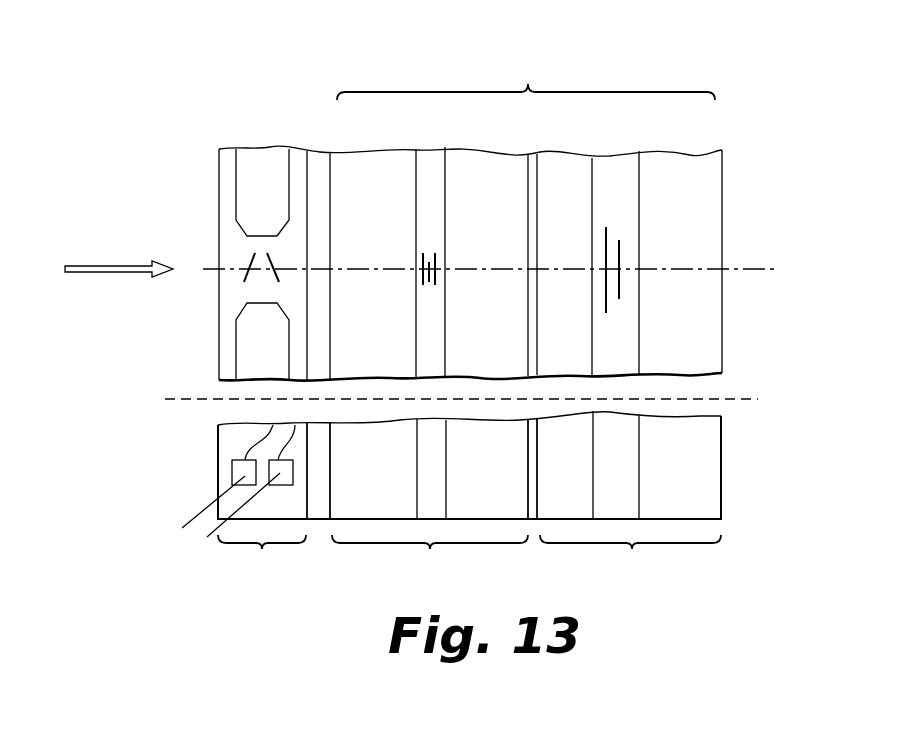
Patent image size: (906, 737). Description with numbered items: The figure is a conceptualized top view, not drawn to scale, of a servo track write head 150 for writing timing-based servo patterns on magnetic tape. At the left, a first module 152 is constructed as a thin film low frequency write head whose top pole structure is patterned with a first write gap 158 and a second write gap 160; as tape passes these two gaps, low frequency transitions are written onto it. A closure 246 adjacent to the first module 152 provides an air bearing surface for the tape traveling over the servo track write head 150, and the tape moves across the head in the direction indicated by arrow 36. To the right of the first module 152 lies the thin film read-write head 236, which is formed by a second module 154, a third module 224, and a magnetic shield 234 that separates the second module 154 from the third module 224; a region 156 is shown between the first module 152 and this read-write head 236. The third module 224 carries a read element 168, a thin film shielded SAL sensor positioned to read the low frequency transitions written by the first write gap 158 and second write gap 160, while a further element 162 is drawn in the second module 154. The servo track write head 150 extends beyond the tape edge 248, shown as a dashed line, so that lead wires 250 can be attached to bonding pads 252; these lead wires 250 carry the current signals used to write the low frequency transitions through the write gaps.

The servo track write head 150 is at (713, 73).
The fluid flow direction 36 is at (127, 264).
The closure 246 is at (245, 167).
The first write gap 158 is at (244, 280).
The second write gap 160 is at (271, 280).
The read element 168 is at (432, 240).
The second electrode set 162 is at (612, 215).
The thin film read-write head 236 is at (526, 79).
The tape edge 248 is at (185, 400).
The bonding pads 252 is at (268, 461).
The lead wires 250 is at (193, 513).
The first module 152 is at (262, 558).
The inlet wall 156 is at (322, 520).
The third module 224 is at (430, 558).
The magnetic shield 234 is at (537, 520).
The second module 154 is at (630, 558).